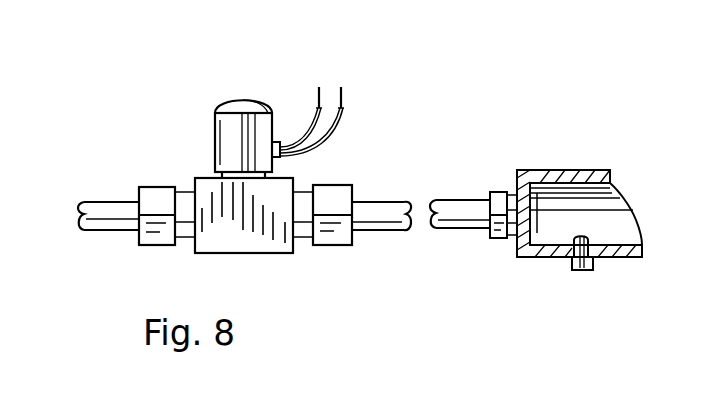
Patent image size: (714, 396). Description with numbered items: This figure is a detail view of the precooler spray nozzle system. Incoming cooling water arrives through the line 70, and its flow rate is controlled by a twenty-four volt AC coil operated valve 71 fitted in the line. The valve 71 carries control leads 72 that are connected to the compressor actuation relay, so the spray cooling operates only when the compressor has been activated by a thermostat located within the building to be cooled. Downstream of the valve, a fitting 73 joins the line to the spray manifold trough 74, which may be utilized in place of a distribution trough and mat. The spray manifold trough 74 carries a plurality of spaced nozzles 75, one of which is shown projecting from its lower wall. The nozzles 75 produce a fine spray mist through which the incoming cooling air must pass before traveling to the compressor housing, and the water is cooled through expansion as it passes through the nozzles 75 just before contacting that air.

The line 70 is at (112, 212).
The coil operated valve 71 is at (208, 187).
The control leads 72 is at (337, 103).
The outlet fitting nut 73 is at (387, 213).
The spray manifold trough 74 is at (549, 173).
The nozzles 75 is at (572, 262).